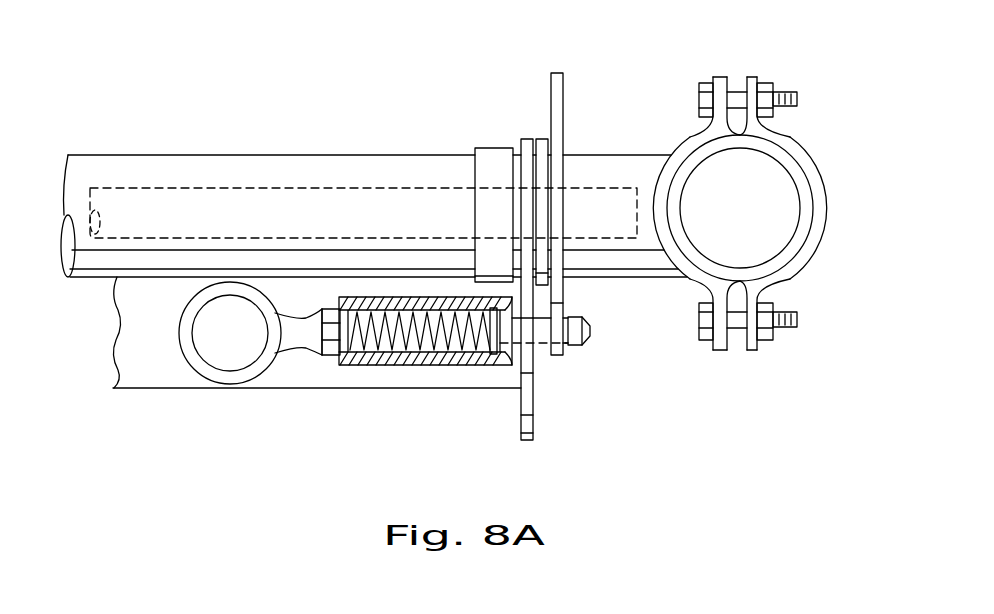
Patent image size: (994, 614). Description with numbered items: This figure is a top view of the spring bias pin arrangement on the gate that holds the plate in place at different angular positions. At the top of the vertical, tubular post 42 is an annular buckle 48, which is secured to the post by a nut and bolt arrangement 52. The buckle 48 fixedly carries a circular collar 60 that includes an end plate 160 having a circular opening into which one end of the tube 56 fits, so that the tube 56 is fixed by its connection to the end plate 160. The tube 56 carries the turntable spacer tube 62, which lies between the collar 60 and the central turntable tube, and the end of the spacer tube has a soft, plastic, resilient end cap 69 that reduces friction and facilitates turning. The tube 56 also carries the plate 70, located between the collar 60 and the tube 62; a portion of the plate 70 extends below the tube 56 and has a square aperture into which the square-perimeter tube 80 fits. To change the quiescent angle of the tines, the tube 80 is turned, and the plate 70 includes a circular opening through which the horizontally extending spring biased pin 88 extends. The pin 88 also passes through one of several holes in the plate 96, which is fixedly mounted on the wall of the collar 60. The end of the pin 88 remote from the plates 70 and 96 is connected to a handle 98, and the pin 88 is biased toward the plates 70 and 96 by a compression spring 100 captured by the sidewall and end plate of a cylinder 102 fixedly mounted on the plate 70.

The vertical tubular post 42 is at (802, 185).
The annular buckle 48 is at (813, 240).
The nut and bolt arrangement 52 is at (770, 84).
The tube 56 is at (293, 193).
The circular collar 60 is at (605, 155).
The turntable spacer tube 62 is at (168, 162).
The end cap 69 is at (488, 155).
The plate 70 is at (532, 398).
The tube 80 is at (158, 373).
The spring biased pin 88 is at (591, 333).
The plate 96 is at (557, 75).
The handle 98 is at (236, 376).
The compression spring 100 is at (405, 350).
The cylinder 102 is at (455, 366).
The end plate 160 is at (540, 145).